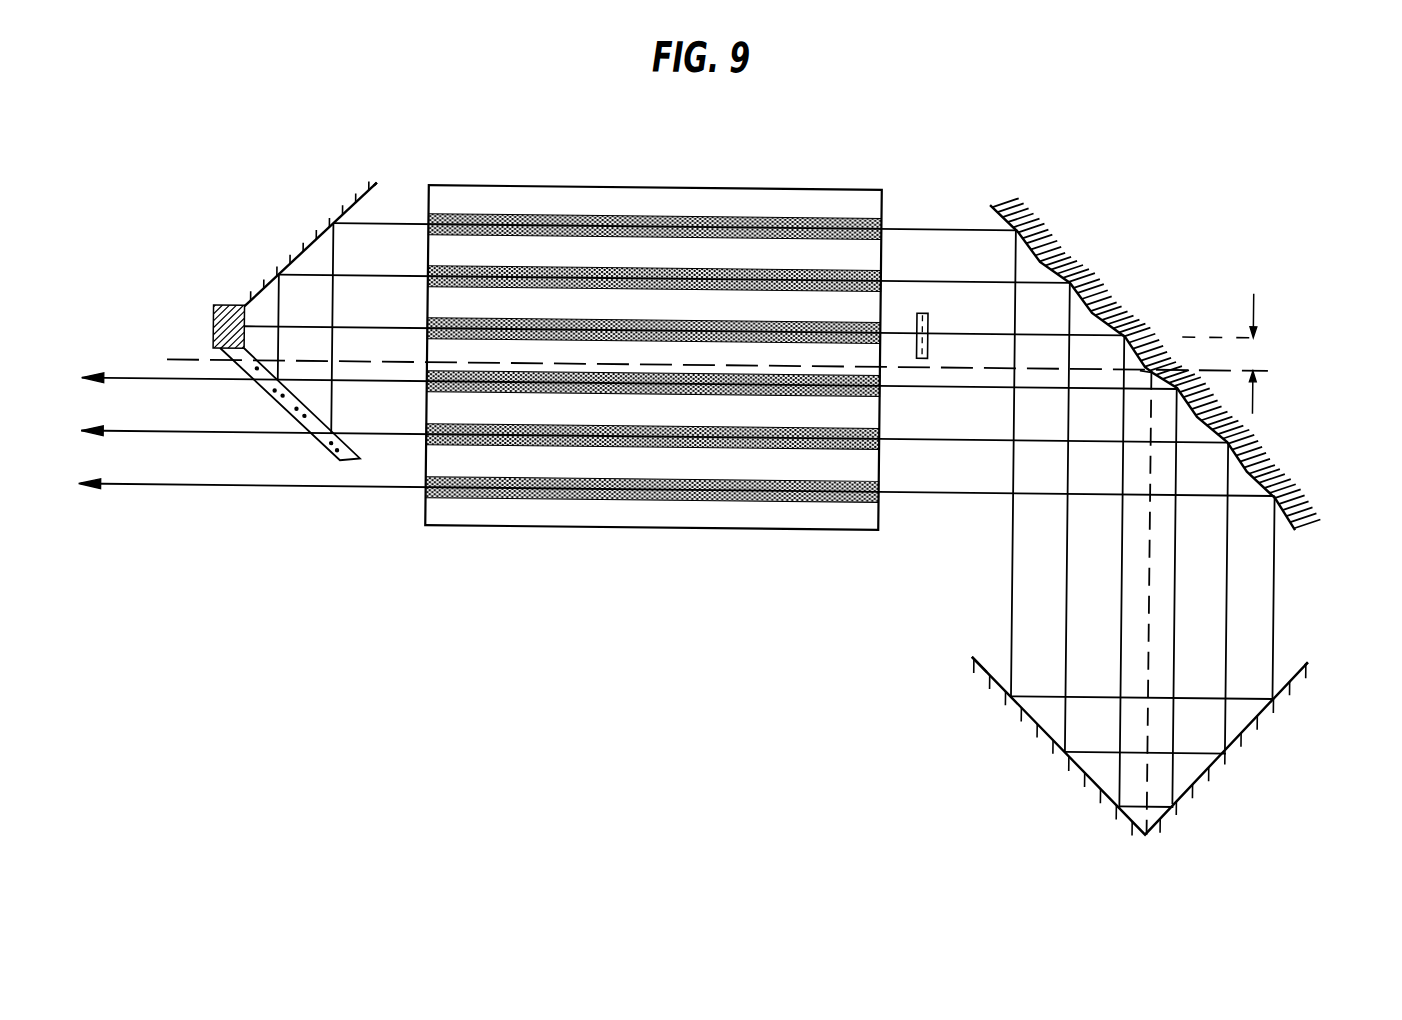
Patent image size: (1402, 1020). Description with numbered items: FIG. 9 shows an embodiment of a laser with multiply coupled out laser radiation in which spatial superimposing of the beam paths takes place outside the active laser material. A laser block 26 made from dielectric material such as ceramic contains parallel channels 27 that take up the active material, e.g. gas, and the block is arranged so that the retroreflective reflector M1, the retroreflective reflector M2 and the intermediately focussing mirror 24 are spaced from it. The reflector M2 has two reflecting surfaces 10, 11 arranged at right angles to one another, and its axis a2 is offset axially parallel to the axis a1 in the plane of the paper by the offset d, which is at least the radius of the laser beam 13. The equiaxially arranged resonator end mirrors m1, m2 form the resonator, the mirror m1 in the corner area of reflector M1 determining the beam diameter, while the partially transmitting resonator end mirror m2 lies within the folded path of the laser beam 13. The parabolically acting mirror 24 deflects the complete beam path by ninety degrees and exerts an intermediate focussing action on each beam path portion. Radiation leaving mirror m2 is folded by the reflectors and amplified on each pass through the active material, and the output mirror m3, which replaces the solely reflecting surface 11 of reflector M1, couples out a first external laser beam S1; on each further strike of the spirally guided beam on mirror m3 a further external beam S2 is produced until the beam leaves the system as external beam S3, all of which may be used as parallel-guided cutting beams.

The reflecting surface 10 is at (375, 186).
The reflecting surface 11 is at (975, 650).
The laser beam 13 is at (925, 227).
The parabolically acting mirror 24 is at (988, 200).
The laser block 26 is at (764, 187).
The channels 27 is at (545, 217).
The retroreflective reflector M1 is at (311, 225).
The retroreflective reflector M2 is at (1139, 773).
The resonator end mirror m1 is at (208, 303).
The resonator end mirror m2 is at (928, 311).
The output mirror m3 is at (361, 462).
The axis a1 is at (1166, 330).
The axis a2 is at (1118, 366).
The offset d is at (1258, 354).
The first external laser beam S1 is at (100, 362).
The external laser beam S2 is at (99, 415).
The external beam S3 is at (98, 467).